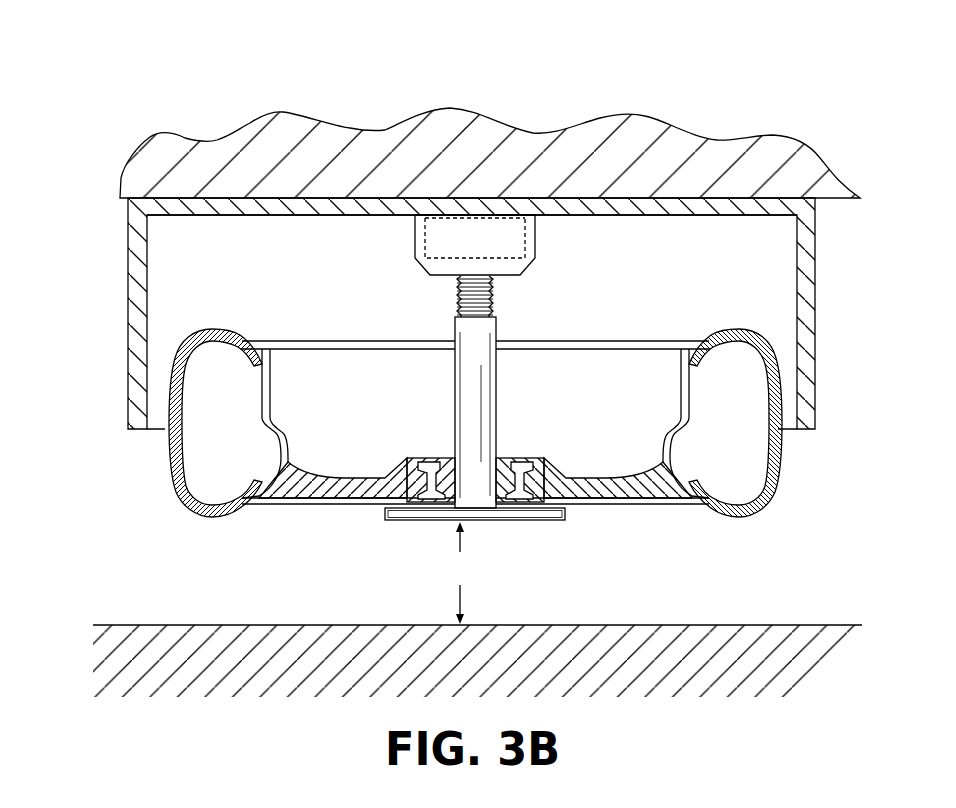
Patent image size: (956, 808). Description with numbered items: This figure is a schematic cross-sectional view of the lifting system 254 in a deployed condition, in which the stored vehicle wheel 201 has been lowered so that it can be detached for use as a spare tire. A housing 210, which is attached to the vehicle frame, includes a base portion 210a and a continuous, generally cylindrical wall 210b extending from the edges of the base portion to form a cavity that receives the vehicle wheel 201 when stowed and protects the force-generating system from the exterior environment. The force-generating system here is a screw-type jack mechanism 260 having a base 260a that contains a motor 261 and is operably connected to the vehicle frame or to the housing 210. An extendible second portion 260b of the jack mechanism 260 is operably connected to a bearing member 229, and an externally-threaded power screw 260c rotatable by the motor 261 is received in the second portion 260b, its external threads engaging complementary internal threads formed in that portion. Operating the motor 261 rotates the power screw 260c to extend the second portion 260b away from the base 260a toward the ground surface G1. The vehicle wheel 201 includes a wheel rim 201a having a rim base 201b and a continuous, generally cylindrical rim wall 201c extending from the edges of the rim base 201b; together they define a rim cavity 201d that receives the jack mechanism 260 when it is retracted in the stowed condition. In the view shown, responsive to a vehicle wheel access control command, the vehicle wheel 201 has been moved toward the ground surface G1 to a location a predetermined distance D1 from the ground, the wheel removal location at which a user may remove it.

The lifting system 254 is at (204, 108).
The housing 210 is at (442, 286).
The base portion 210a is at (317, 197).
The wall 210b is at (137, 430).
The screw-type jack mechanism 260 is at (519, 160).
The base 260a is at (492, 233).
The second portion 260b is at (466, 420).
The power screw 260c is at (458, 297).
The motor 261 is at (532, 222).
The vehicle wheel 201 is at (790, 478).
The wheel rim 201a is at (605, 500).
The rim base 201b is at (588, 505).
The rim wall 201c is at (688, 403).
The rim cavity 201d is at (352, 410).
The bearing member 229 is at (525, 520).
The predetermined distance D1 is at (459, 573).
The ground surface G1 is at (775, 625).